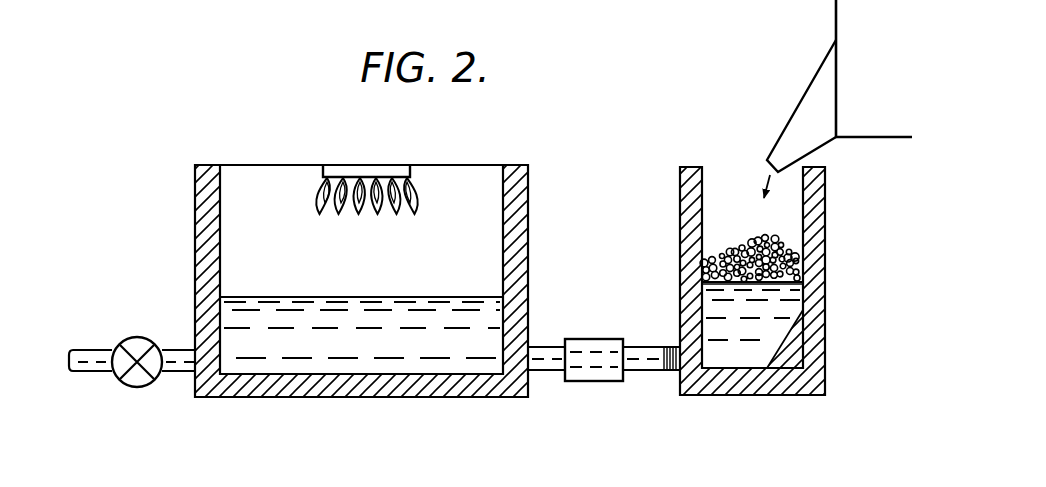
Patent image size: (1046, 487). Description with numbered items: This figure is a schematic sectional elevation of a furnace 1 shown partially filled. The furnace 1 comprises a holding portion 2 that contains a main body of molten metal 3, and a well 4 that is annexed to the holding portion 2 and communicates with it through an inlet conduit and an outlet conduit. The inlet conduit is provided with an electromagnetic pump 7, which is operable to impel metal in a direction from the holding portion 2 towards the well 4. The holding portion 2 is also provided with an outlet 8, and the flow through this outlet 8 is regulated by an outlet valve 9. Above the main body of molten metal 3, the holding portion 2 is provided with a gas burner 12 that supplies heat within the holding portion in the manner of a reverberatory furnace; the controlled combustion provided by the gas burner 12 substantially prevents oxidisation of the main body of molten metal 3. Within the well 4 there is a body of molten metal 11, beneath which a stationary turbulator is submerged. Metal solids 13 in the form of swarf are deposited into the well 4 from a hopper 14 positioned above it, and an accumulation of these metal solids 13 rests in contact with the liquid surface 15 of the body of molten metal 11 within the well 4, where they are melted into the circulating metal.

The furnace 1 is at (150, 180).
The holding portion 2 is at (196, 262).
The main body of molten metal 3 is at (353, 352).
The well 4 is at (681, 183).
The electromagnetic pump 7 is at (584, 340).
The outlet 8 is at (93, 349).
The outlet valve 9 is at (137, 338).
The body of molten metal 11 is at (790, 303).
The gas burner 12 is at (340, 172).
The metal solids 13 is at (770, 250).
The hopper 14 is at (797, 110).
The liquid surface 15 is at (735, 285).